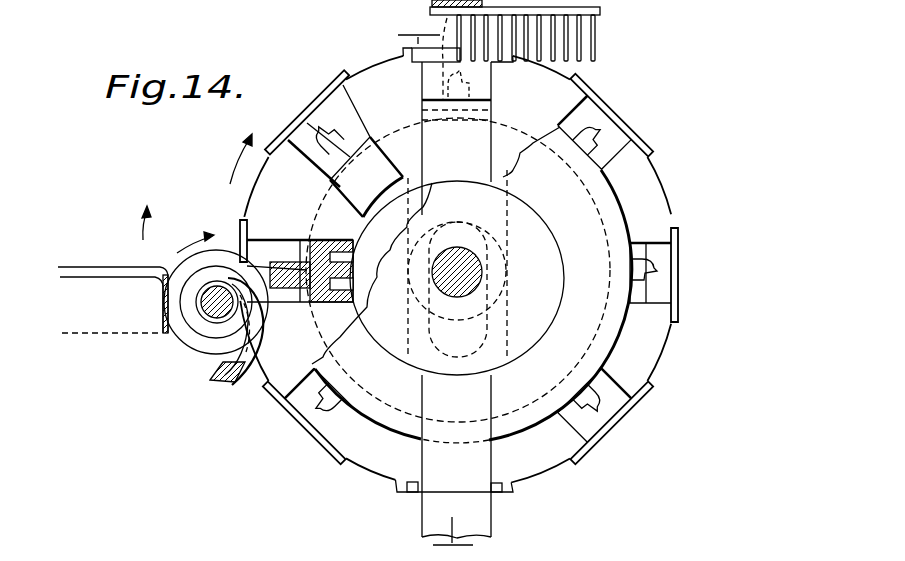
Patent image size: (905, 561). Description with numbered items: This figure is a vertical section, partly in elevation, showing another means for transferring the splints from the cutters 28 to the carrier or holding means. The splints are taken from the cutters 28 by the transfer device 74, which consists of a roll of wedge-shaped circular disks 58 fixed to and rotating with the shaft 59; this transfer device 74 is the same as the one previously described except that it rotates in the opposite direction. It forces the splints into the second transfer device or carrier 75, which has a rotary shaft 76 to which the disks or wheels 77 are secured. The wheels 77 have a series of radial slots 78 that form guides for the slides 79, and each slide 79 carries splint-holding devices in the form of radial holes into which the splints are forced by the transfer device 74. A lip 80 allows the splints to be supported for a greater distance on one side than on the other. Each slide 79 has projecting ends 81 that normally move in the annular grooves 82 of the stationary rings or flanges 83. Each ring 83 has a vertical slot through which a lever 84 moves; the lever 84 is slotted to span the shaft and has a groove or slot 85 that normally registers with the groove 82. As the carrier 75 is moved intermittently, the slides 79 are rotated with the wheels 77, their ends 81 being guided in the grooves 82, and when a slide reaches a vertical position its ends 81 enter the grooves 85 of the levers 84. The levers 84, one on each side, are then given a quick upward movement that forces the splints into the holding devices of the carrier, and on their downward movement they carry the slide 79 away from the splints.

The cutters 28 is at (90, 273).
The wedge-shaped circular disks 58 is at (183, 337).
The shaft 59 is at (216, 292).
The transfer device 74 is at (220, 334).
The second transfer device or carrier 75 is at (224, 162).
The rotary shaft 76 is at (483, 266).
The disks or wheels 77 is at (371, 73).
The radial slots 78 is at (427, 90).
The slides 79 is at (348, 270).
The lip 80 is at (562, 128).
The projecting ends 81 is at (383, 168).
The annular grooves 82 is at (383, 202).
The stationary rings or flanges 83 is at (600, 196).
The lever 84 is at (474, 517).
The groove or slot 85 is at (492, 131).